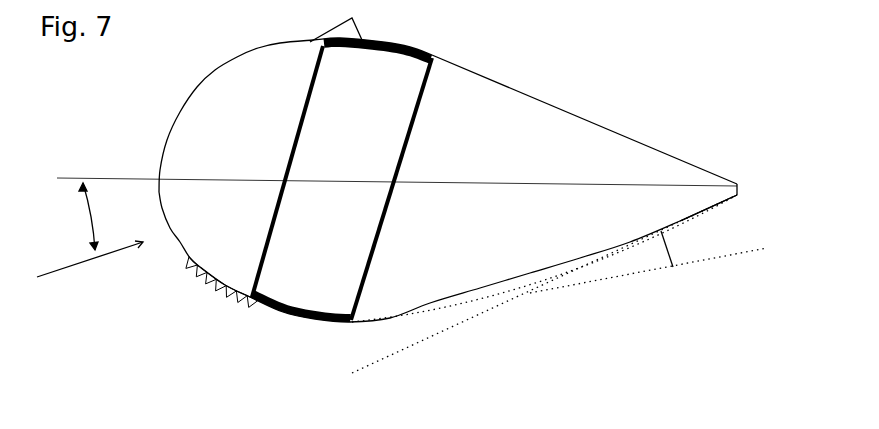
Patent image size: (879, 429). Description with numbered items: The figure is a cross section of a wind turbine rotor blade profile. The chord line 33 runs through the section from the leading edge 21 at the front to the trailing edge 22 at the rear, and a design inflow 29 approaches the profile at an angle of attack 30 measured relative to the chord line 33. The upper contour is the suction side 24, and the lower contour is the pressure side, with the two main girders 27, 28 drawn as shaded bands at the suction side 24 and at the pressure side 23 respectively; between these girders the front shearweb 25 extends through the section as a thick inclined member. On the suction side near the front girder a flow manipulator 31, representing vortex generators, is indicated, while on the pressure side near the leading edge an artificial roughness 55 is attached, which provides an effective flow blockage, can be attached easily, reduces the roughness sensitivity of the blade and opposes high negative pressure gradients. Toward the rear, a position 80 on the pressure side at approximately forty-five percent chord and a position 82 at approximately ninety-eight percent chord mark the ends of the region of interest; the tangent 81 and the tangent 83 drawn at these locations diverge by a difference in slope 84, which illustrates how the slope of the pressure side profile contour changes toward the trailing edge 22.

The leading edge 21 is at (162, 156).
The trailing edge 22 is at (740, 191).
The pressure side 23 is at (288, 317).
The suction side 24 is at (508, 82).
The front shearweb 25 is at (297, 133).
The main girder 27 is at (391, 189).
The main girder 28 is at (293, 307).
The design inflow 29 is at (73, 268).
The angle of attack 30 is at (88, 239).
The flow manipulator 31 is at (360, 23).
The chord line 33 is at (497, 182).
The artificial roughness 55 is at (220, 299).
The position at the pressure side 80 is at (376, 320).
The tangent 81 is at (760, 253).
The position at the pressure side 82 is at (730, 203).
The tangent 83 is at (447, 329).
The difference in slope 84 is at (675, 243).